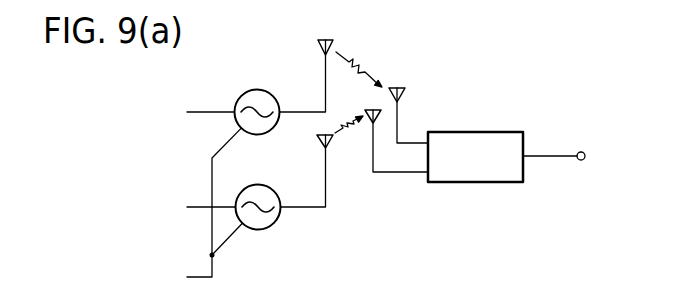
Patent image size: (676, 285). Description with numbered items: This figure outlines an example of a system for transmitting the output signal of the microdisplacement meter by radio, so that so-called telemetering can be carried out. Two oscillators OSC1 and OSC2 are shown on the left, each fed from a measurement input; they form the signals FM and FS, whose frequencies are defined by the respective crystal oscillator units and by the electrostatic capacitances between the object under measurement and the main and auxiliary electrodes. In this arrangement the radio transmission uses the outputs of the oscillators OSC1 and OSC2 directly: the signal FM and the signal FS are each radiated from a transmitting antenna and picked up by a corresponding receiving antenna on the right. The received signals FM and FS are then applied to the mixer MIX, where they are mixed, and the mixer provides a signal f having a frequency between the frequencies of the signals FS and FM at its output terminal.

The oscillator OSC1 is at (258, 90).
The oscillator OSC2 is at (259, 184).
The signal FM is at (359, 98).
The signal FS is at (360, 158).
The mixer MIX is at (475, 157).
The signal f is at (554, 144).